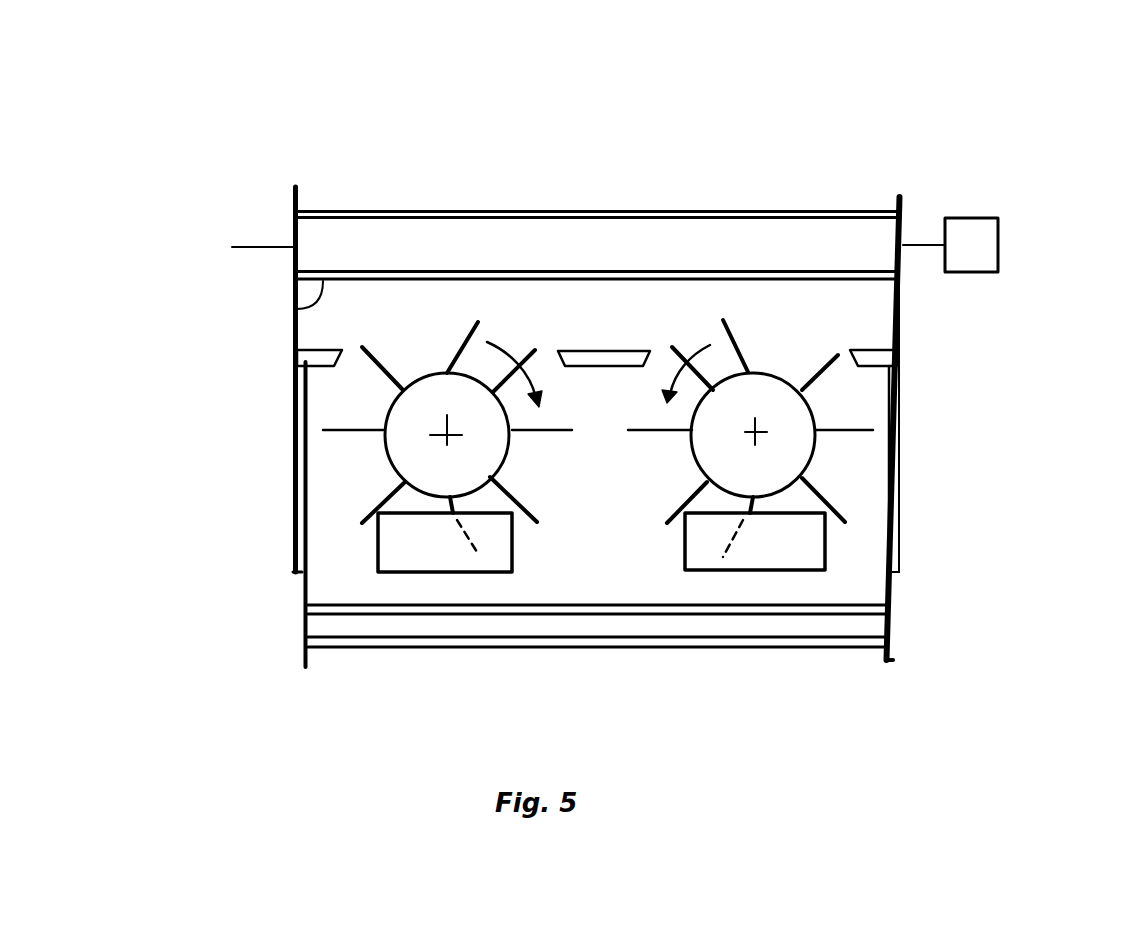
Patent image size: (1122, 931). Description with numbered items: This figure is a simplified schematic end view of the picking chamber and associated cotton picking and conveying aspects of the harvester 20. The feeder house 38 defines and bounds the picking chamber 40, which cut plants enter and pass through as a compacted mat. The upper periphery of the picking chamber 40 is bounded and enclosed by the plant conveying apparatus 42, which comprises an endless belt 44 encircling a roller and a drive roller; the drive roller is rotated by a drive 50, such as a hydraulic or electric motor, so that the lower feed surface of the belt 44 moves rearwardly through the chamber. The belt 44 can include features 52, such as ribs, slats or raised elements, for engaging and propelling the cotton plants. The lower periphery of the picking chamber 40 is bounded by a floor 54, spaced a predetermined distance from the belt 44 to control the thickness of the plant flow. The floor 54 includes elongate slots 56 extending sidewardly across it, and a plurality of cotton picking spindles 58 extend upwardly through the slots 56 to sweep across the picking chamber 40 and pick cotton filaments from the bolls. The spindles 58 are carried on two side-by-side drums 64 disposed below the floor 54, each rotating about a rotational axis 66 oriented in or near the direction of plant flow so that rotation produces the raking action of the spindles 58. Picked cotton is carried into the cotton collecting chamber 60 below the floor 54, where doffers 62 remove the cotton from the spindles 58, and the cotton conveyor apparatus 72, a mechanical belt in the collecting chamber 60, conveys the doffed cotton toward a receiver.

The harvester 20 is at (985, 148).
The feeder house 38 is at (908, 323).
The picking chamber 40 is at (497, 308).
The plant conveying apparatus 42 is at (295, 310).
The endless belt 44 is at (655, 210).
The drive 50 is at (999, 236).
The features 52 is at (800, 282).
The floor 54 is at (597, 350).
The elongate slots 56 is at (397, 353).
The cotton picking spindles 58 is at (465, 333).
The cotton collecting chamber 60 is at (860, 527).
The doffers 62 is at (418, 545).
The drum 64 is at (387, 407).
The rotational axis 66 is at (448, 436).
The cotton conveyor apparatus 72 is at (813, 652).